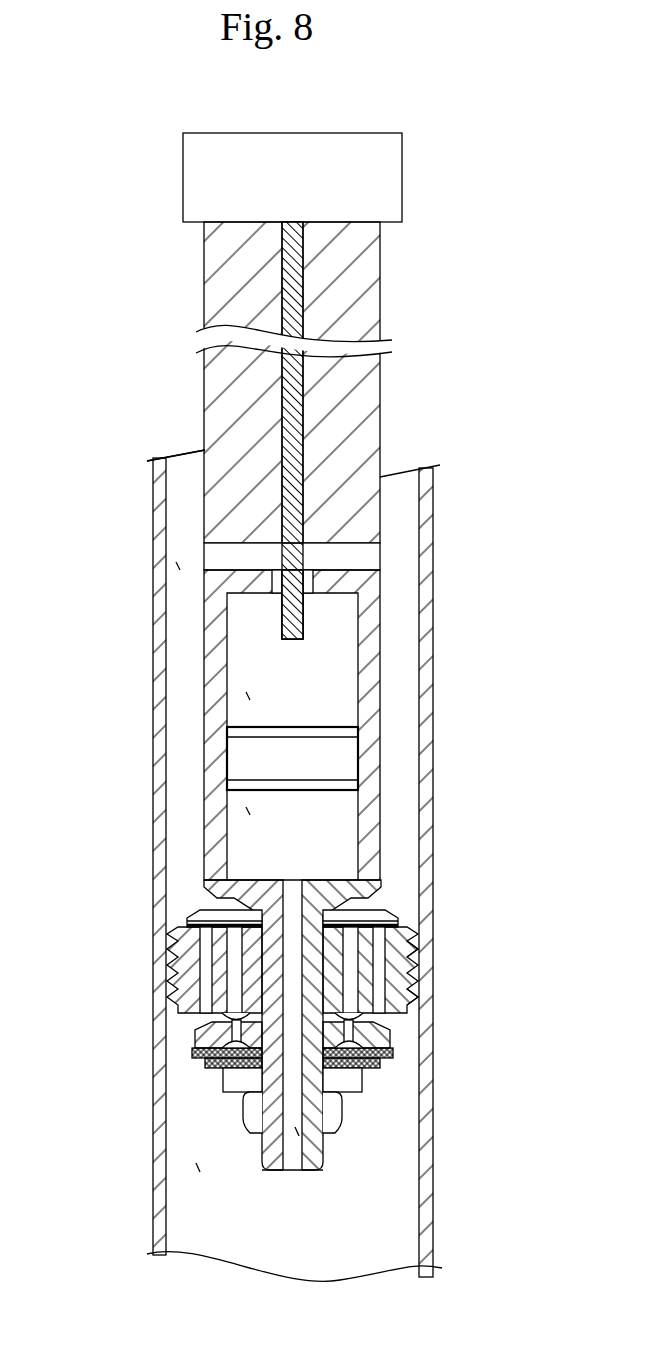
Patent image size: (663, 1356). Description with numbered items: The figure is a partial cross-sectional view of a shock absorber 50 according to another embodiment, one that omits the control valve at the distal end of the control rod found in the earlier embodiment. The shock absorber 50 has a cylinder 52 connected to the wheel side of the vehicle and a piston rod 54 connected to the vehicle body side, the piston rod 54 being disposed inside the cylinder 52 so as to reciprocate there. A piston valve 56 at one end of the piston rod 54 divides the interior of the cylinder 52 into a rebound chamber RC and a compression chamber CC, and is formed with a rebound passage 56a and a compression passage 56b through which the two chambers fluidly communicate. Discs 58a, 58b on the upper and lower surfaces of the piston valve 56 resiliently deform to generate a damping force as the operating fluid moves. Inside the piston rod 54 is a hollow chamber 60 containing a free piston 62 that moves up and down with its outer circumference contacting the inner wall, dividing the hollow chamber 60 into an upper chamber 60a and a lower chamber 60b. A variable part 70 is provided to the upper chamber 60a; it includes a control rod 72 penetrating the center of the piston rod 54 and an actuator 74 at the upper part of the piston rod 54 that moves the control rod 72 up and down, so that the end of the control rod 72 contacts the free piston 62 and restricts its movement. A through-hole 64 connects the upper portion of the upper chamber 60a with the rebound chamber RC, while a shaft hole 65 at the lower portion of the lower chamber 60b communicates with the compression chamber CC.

The shock absorber 50 is at (472, 408).
The cylinder 52 is at (431, 550).
The piston rod 54 is at (255, 725).
The piston valve 56 is at (330, 987).
The rebound passage 56a is at (412, 990).
The compression passage 56b is at (412, 972).
The disc 58a is at (381, 1068).
The disc 58b is at (393, 910).
The hollow chamber 60 is at (139, 757).
The upper chamber 60a is at (248, 697).
The lower chamber 60b is at (248, 812).
The free piston 62 is at (348, 757).
The through-hole 64 is at (353, 548).
The shaft hole 65 is at (297, 1132).
The variable part 70 is at (296, 386).
The control rod 72 is at (287, 393).
The actuator 74 is at (190, 181).
The rebound chamber RC is at (178, 567).
The compression chamber CC is at (198, 1168).